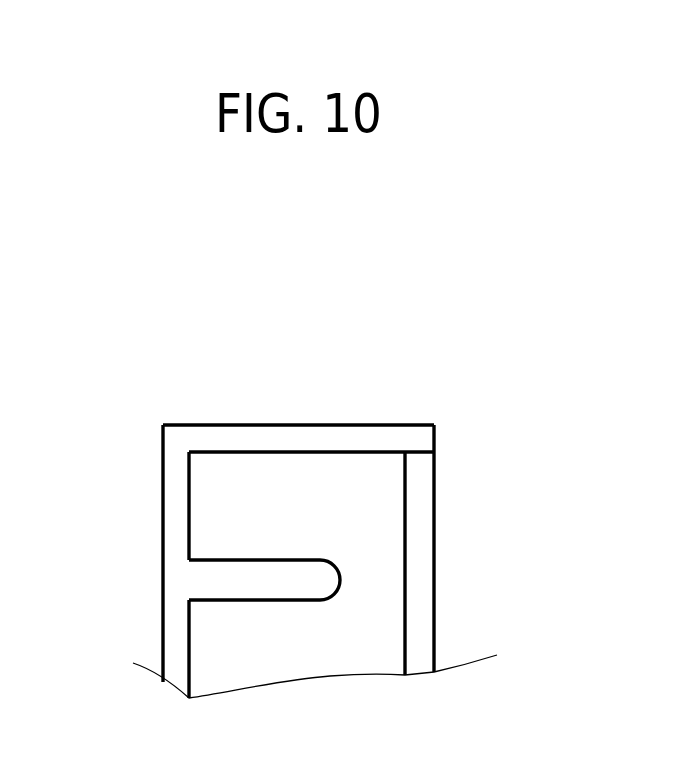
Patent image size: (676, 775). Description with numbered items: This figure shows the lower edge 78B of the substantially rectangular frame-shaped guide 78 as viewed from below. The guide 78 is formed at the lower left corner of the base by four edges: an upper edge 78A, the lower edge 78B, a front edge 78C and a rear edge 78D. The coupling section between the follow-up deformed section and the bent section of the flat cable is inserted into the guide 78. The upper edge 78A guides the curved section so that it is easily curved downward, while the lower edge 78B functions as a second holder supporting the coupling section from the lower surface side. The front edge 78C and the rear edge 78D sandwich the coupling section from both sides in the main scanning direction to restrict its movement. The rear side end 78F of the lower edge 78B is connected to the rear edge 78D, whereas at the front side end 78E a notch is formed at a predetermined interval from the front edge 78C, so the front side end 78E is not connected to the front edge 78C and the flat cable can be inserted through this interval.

The guide 78 is at (297, 506).
The upper edge 78A is at (393, 440).
The lower edge 78B is at (264, 457).
The front edge 78C is at (422, 517).
The rear edge 78D is at (178, 535).
The front side end 78E is at (323, 580).
The rear side end 78F is at (195, 580).